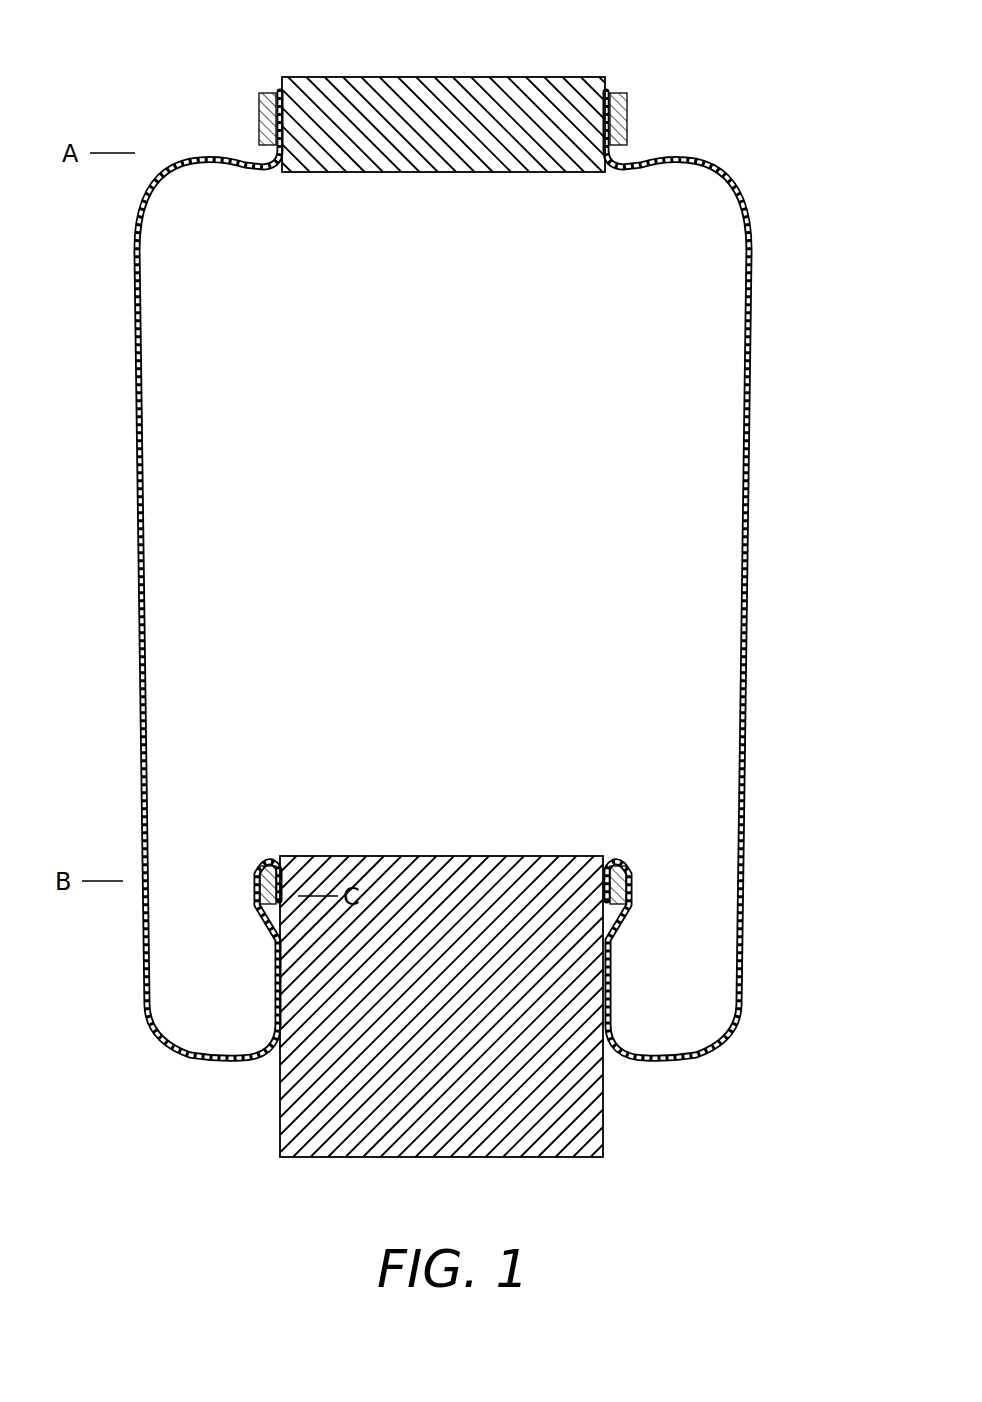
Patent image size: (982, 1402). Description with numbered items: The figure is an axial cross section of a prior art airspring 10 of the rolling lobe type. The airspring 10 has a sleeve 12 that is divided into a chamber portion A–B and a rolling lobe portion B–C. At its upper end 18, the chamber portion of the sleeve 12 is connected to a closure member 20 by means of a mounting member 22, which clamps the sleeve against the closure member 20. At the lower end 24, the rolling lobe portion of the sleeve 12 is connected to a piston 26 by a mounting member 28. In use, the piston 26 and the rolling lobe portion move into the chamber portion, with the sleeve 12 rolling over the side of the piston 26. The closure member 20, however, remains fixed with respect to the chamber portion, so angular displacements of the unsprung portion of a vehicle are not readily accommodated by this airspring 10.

The airspring 10 is at (514, 585).
The sleeve 12 is at (744, 678).
The end 18 is at (258, 163).
The closure member 20 is at (392, 120).
The mounting member 22 is at (627, 125).
The end 24 is at (630, 883).
The piston 26 is at (538, 1083).
The mounting member 28 is at (257, 880).